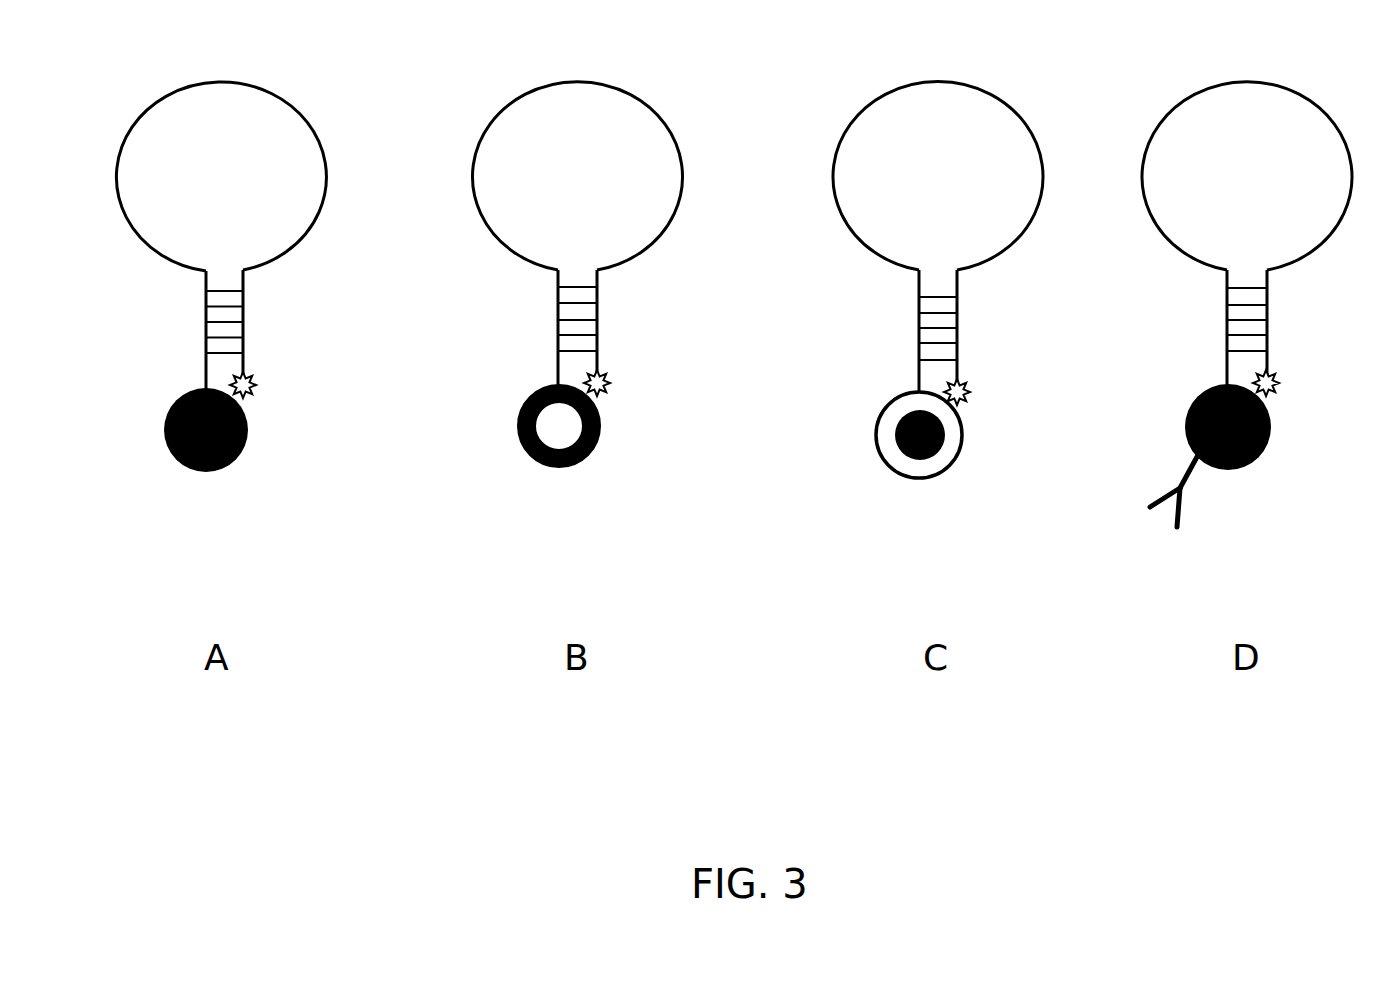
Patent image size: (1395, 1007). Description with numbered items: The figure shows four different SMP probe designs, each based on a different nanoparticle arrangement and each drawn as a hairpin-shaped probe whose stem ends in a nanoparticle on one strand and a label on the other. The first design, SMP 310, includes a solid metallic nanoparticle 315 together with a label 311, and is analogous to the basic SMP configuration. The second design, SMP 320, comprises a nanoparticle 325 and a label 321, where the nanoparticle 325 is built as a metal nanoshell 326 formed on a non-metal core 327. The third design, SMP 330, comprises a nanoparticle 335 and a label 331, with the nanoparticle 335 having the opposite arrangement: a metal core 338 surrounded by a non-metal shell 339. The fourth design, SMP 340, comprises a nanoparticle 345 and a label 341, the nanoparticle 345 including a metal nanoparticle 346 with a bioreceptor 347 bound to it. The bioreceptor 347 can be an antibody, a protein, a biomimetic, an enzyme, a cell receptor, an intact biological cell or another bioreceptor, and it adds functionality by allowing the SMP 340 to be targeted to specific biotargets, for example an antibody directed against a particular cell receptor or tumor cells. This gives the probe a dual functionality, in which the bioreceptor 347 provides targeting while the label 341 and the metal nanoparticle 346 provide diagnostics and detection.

The SMP 310 is at (108, 78).
The label 311 is at (260, 380).
The metallic nanoparticle 315 is at (171, 411).
The SMP 320 is at (472, 77).
The label 321 is at (614, 379).
The nanoparticle 325 is at (518, 374).
The metal nanoshell 326 is at (519, 432).
The non-metal core 327 is at (562, 437).
The SMP 330 is at (822, 94).
The label 331 is at (974, 386).
The nanoparticle 335 is at (878, 378).
The metal core 338 is at (910, 456).
The non-metal shell 339 is at (878, 443).
The SMP 340 is at (1143, 88).
The label 341 is at (1283, 380).
The nanoparticle 345 is at (1192, 376).
The metal nanoparticle 346 is at (1266, 450).
The bioreceptor 347 is at (1188, 491).